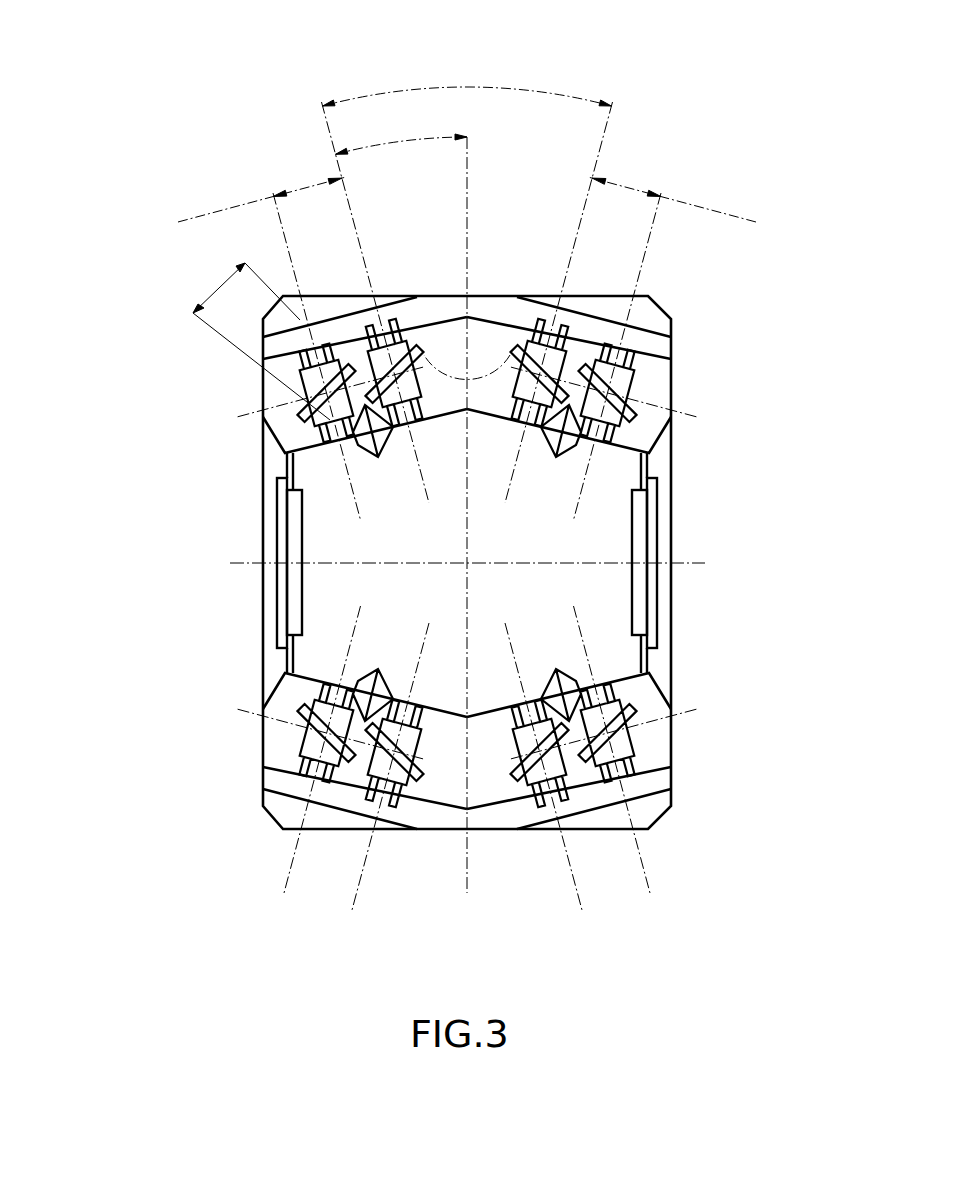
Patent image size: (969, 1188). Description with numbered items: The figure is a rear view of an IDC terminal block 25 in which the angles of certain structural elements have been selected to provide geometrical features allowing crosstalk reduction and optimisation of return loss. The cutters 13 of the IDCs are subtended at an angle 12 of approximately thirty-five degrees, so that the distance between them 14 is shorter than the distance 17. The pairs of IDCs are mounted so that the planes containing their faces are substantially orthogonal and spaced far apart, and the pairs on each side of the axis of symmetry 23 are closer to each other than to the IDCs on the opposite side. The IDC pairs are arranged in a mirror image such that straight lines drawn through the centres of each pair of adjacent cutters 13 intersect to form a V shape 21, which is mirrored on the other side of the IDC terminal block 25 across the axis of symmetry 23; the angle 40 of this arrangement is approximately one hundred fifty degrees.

The angle 12 is at (320, 426).
The cutters 13 is at (330, 398).
The distance between cutters 14 is at (303, 177).
The distance 17 is at (202, 282).
The V shape 21 is at (648, 392).
The axis of symmetry 23 is at (230, 566).
The IDC terminal block 25 is at (470, 469).
The angle 40 is at (503, 325).